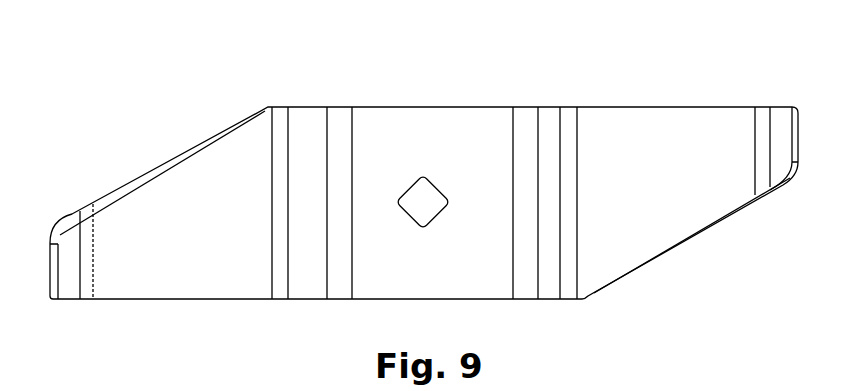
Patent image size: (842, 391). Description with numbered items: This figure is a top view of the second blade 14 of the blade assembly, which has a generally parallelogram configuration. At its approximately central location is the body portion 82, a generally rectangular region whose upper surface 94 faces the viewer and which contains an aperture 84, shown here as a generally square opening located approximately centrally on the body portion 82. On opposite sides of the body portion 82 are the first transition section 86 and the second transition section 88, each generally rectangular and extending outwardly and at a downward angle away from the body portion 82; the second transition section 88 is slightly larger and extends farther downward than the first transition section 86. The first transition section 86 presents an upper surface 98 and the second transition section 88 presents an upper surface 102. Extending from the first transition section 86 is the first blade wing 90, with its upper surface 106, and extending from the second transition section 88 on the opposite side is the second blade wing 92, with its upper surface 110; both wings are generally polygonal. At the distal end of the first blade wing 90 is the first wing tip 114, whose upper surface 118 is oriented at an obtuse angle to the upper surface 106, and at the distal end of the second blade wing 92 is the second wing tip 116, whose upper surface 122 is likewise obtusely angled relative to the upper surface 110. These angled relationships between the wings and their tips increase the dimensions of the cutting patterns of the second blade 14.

The second blade 14 is at (170, 63).
The body portion 82 is at (480, 302).
The aperture 84 is at (432, 200).
The first transition section 86 is at (548, 104).
The second transition section 88 is at (303, 106).
The first blade wing 90 is at (625, 152).
The second blade wing 92 is at (205, 188).
The upper surface 94 is at (395, 133).
The upper surface 98 is at (550, 268).
The upper surface 102 is at (308, 265).
The upper surface 106 is at (642, 225).
The upper surface 110 is at (148, 260).
The first wing tip 114 is at (782, 138).
The second wing tip 116 is at (68, 267).
The upper surface 118 is at (780, 167).
The upper surface 122 is at (72, 243).